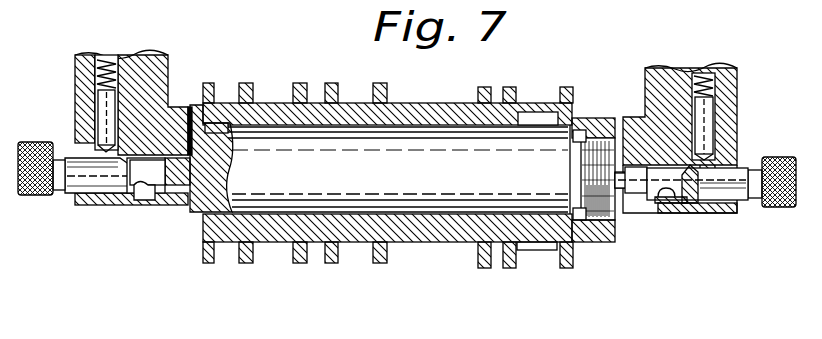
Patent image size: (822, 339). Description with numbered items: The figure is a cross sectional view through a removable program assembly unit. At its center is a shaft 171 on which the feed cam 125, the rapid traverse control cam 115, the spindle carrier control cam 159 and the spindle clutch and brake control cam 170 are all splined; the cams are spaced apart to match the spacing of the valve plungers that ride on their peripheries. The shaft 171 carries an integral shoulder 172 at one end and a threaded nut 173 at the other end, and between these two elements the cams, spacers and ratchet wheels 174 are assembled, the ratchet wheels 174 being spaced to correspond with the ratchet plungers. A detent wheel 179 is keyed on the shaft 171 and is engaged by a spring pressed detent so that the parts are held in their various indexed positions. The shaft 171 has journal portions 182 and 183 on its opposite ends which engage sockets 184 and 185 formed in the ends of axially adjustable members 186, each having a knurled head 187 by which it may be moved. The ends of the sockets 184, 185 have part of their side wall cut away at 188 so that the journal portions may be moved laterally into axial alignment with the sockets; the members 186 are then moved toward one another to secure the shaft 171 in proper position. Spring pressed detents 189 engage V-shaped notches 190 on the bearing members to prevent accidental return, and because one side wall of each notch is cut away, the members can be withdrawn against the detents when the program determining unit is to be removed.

The rapid traverse control cam 115 is at (487, 87).
The feed cam 125 is at (566, 87).
The spindle carrier control cam 159 is at (330, 83).
The spindle clutch and brake control cam 170 is at (243, 83).
The shaft 171 is at (578, 119).
The integral shoulder 172 is at (193, 232).
The threaded nut 173 is at (606, 244).
The ratchet wheels 174 is at (508, 269).
The detent wheel 179 is at (545, 251).
The journal portion 182 is at (170, 196).
The journal portion 183 is at (640, 196).
The socket 184 is at (140, 195).
The socket 185 is at (675, 204).
The axially adjustable members 186 is at (757, 168).
The knurled heads 187 is at (772, 207).
The cut away portion 188 is at (157, 206).
The spring pressed detents 189 is at (705, 118).
The V-shaped notches 190 is at (733, 153).